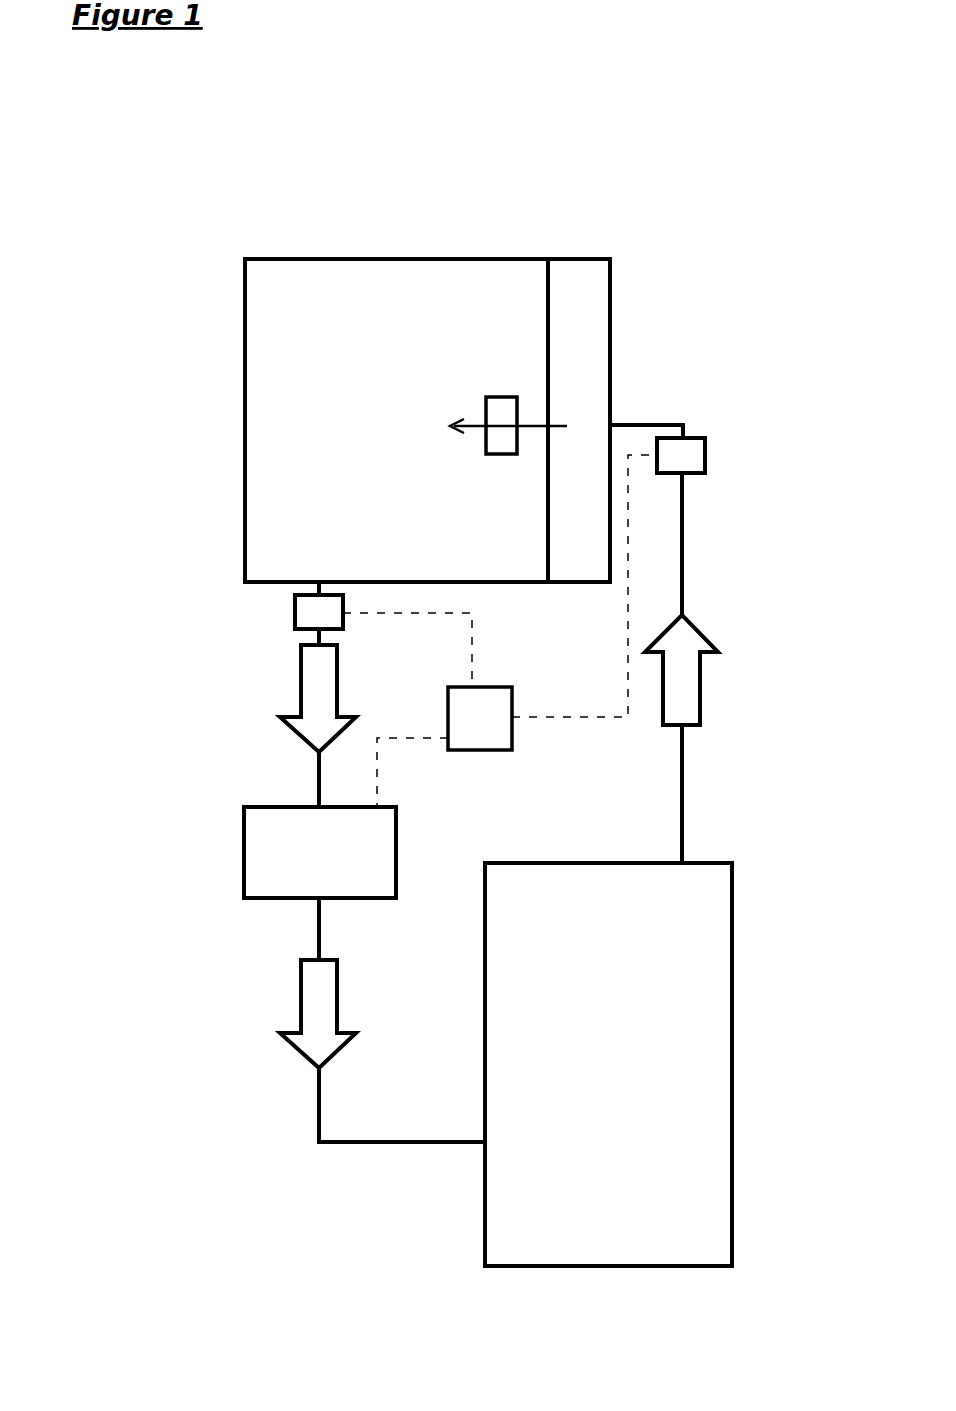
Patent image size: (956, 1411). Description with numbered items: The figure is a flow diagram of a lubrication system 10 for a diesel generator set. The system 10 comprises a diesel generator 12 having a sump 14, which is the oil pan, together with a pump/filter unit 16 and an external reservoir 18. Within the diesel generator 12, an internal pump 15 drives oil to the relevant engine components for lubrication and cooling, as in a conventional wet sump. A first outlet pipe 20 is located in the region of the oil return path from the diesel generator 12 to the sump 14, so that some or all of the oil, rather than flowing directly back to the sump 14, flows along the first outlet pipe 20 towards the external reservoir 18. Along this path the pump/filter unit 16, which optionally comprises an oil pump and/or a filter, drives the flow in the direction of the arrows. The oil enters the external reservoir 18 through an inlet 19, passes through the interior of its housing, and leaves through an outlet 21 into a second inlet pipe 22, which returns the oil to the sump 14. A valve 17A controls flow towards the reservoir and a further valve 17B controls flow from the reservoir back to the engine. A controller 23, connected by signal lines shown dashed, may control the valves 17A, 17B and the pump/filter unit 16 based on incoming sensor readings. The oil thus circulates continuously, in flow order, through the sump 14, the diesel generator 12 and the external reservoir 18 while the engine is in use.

The system 10 is at (230, 1160).
The diesel generator 12 is at (265, 300).
The sump 14 is at (586, 272).
The pump 15 is at (503, 407).
The pump/filter unit 16 is at (255, 837).
The valve 17A is at (300, 609).
The further valve 17B is at (705, 455).
The external reservoir 18 is at (708, 918).
The inlet 19 is at (483, 1140).
The first outlet pipe 20 is at (312, 780).
The outlet 21 is at (684, 850).
The second inlet pipe 22 is at (686, 538).
The controller 23 is at (478, 752).